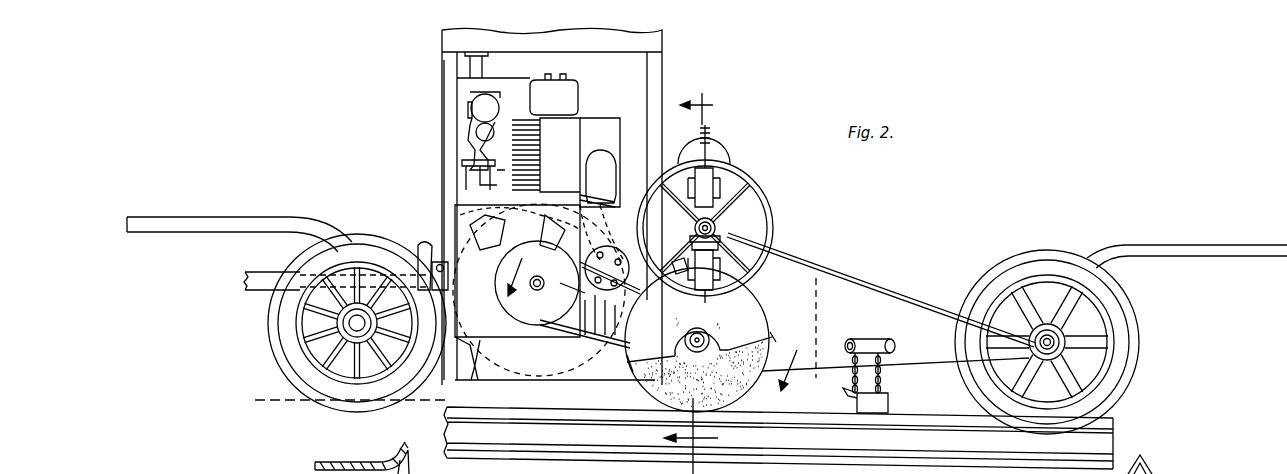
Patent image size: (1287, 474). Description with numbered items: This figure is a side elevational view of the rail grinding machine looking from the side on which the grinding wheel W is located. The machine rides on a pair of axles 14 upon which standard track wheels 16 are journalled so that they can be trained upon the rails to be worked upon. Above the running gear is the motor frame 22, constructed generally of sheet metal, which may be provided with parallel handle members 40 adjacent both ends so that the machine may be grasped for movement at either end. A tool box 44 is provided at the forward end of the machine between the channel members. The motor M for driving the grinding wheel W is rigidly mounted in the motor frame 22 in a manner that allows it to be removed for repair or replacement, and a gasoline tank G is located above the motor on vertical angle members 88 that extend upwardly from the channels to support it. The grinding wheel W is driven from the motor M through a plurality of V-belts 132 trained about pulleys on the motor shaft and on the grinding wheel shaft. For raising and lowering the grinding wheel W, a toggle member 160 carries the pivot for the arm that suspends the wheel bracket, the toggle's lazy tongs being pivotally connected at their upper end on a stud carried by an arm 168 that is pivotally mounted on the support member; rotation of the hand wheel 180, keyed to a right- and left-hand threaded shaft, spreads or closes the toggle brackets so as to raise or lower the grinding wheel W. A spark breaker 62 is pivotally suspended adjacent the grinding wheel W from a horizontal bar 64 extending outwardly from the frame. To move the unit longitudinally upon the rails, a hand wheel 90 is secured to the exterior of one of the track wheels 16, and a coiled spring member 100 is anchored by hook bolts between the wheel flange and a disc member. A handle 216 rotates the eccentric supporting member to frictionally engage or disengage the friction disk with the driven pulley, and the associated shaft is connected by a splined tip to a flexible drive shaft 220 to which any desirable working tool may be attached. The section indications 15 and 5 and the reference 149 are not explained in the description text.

The gasoline tank G is at (448, 37).
The vertical angle members 88 is at (440, 85).
The motor M is at (462, 152).
The handle 216 is at (420, 243).
The handle members 40 is at (181, 216).
The flexible drive shaft 220 is at (250, 271).
The hand wheel 90 is at (287, 304).
The axles 14 is at (347, 327).
The track wheels 16 is at (283, 372).
The section line 15 is at (650, 323).
The V-belts 132 is at (570, 332).
The support 149 is at (503, 327).
The grinding wheel W is at (742, 350).
The arm 168 is at (707, 187).
The hand wheel 180 is at (720, 203).
The toggle member 160 is at (727, 230).
The motor frame 22 is at (806, 267).
The tool box 44 is at (880, 289).
The horizontal bar 64 is at (870, 342).
The spark breaker 62 is at (888, 401).
The section line 5 is at (698, 283).
The coiled spring member 100 is at (358, 452).